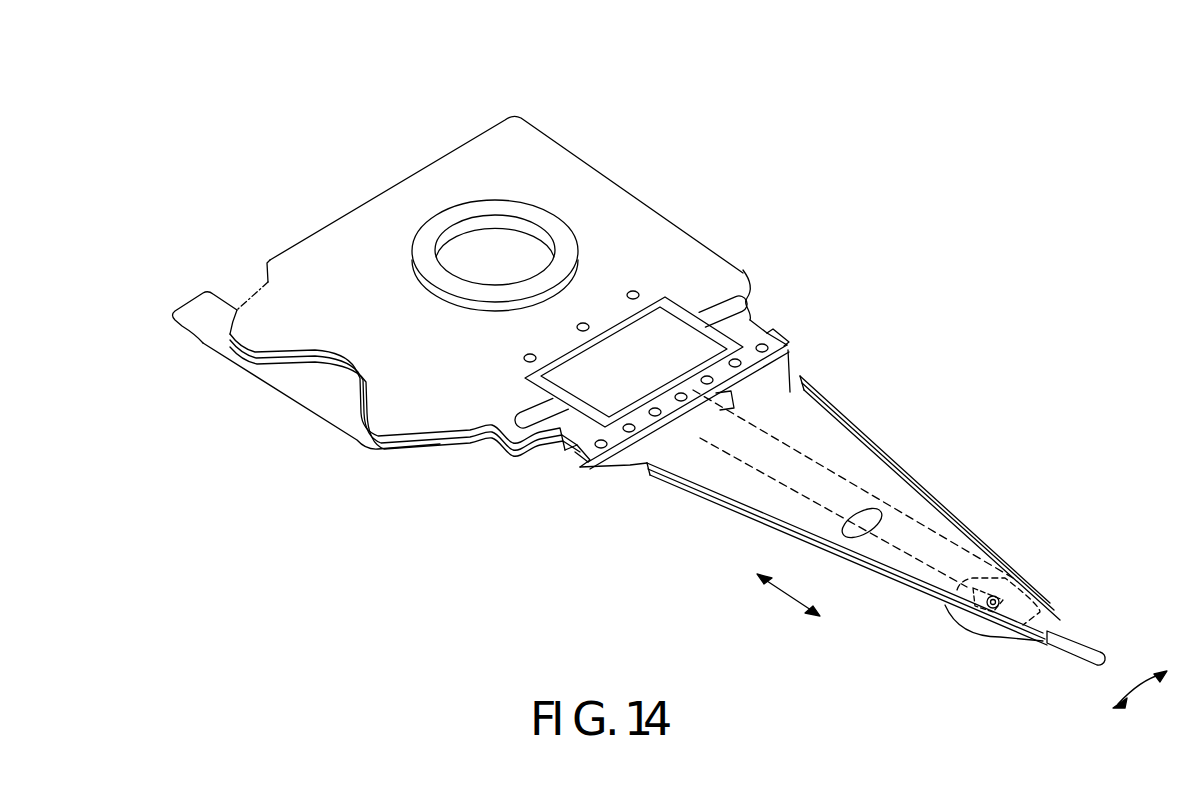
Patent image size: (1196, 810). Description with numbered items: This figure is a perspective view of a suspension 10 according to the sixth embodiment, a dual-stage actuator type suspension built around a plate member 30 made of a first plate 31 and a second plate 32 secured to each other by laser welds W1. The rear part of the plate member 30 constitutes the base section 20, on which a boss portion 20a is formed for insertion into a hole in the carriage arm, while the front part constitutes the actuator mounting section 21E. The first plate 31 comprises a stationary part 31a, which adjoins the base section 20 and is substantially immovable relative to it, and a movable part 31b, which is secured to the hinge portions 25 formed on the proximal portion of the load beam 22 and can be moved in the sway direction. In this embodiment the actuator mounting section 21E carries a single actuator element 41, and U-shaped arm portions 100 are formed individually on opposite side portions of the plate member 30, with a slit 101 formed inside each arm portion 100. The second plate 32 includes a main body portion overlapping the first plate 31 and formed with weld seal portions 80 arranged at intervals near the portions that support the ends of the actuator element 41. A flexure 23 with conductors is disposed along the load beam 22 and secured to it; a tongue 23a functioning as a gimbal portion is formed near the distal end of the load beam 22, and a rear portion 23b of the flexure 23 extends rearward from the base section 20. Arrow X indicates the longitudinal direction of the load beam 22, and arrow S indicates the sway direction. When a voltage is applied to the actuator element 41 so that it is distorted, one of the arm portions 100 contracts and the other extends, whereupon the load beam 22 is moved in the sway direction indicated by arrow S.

The suspension 10 is at (806, 108).
The base section 20 is at (676, 202).
The boss portion 20a is at (505, 198).
The actuator mounting section 21E is at (779, 294).
The load beam 22 is at (912, 511).
The flexure 23 is at (915, 572).
The tongue 23a is at (1010, 584).
The rear portion 23b is at (294, 386).
The hinge portions 25 is at (782, 373).
The plate member 30 is at (705, 241).
The first plate 31 is at (598, 187).
The stationary part 31a is at (562, 352).
The movable part 31b is at (713, 486).
The second plate 32 is at (432, 456).
The actuator element 41 is at (625, 306).
The weld seal portions 80 is at (637, 290).
The arm portions 100 is at (770, 284).
The slit 101 is at (758, 308).
The laser welds W1 is at (778, 334).
The arrow X is at (788, 600).
The arrow S is at (1140, 693).